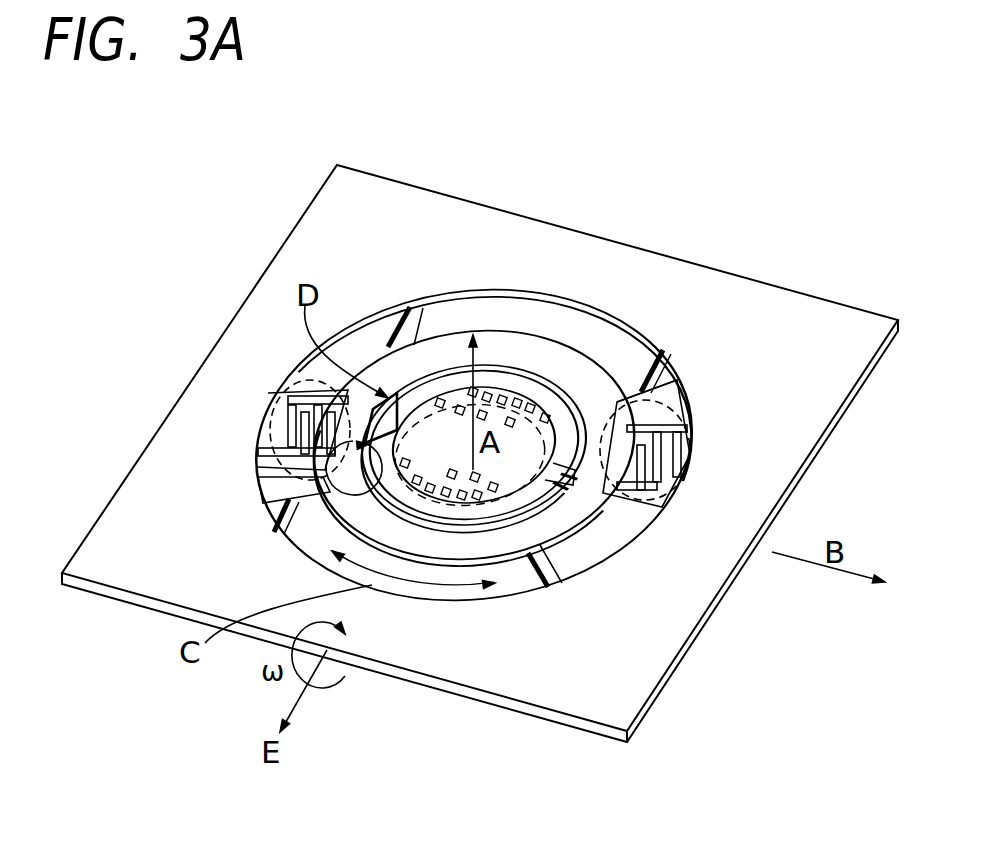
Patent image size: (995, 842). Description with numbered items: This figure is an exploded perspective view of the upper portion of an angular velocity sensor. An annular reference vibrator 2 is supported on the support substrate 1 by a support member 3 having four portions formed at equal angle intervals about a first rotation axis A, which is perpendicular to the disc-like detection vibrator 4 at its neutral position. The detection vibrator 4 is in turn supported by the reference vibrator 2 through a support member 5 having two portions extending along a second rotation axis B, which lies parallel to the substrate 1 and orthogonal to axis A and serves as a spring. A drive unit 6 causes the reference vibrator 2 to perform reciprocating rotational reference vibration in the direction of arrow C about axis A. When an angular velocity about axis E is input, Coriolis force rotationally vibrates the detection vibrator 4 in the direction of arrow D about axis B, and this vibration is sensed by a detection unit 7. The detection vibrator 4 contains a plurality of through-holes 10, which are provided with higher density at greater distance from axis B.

The support substrate 1 is at (343, 205).
The reference vibrator 2 is at (462, 335).
The support member 3 is at (395, 320).
The detection vibrator 4 is at (655, 395).
The support member 5 is at (430, 362).
The drive unit 6 is at (298, 397).
The detection unit 7 is at (512, 400).
The through-holes 10 is at (395, 478).